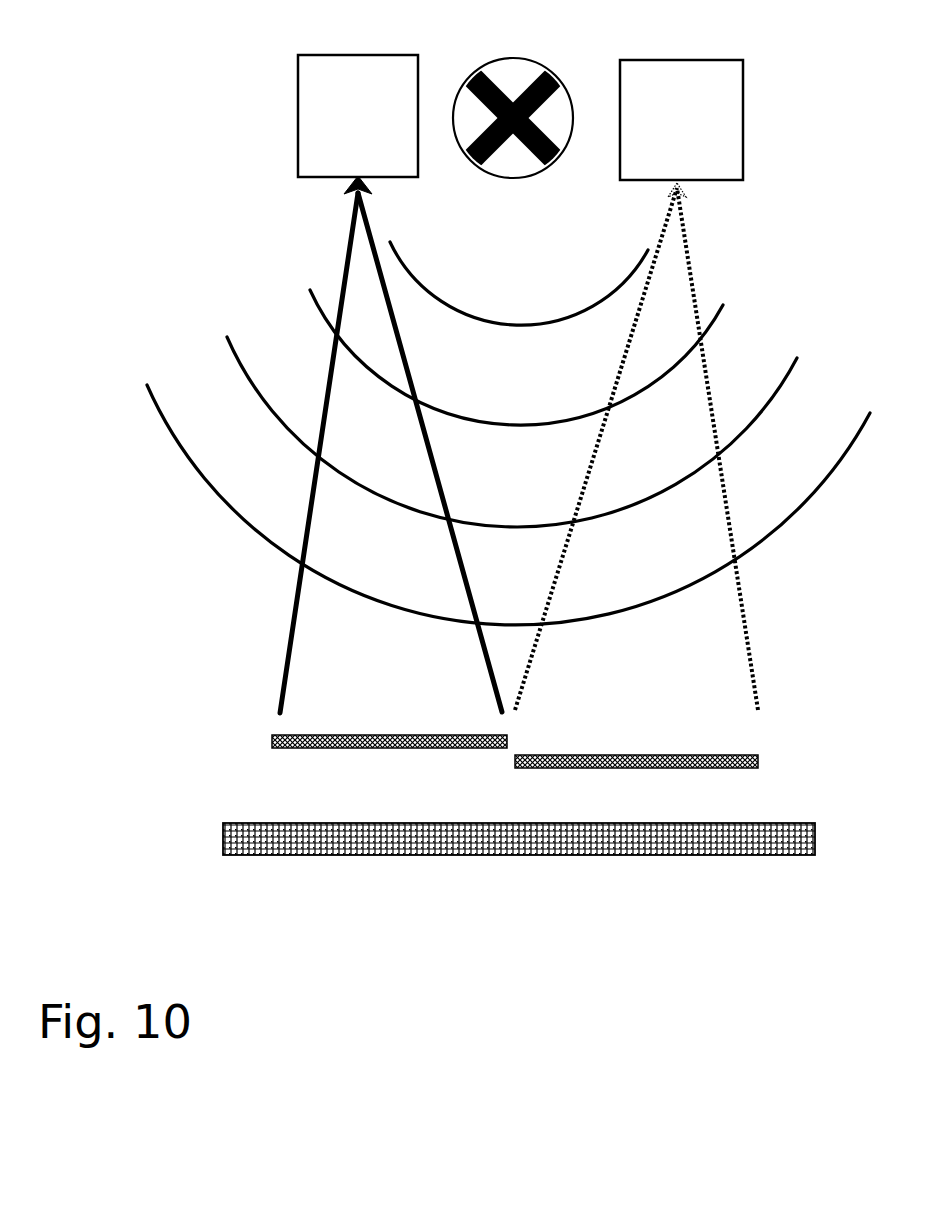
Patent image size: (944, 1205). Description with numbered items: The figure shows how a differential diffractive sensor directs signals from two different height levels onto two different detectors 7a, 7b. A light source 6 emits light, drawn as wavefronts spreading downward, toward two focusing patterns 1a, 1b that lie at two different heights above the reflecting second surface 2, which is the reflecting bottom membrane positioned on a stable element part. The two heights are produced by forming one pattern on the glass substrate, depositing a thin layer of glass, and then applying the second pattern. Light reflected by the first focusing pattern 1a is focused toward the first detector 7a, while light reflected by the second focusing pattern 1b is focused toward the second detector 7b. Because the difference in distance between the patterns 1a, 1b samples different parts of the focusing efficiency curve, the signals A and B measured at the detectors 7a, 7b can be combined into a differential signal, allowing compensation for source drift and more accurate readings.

The detector 7a is at (358, 116).
The detector 7b is at (681, 120).
The light source 6 is at (510, 170).
The focusing pattern 1a is at (389, 716).
The focusing pattern 1b is at (636, 737).
The second surface 2 is at (519, 814).